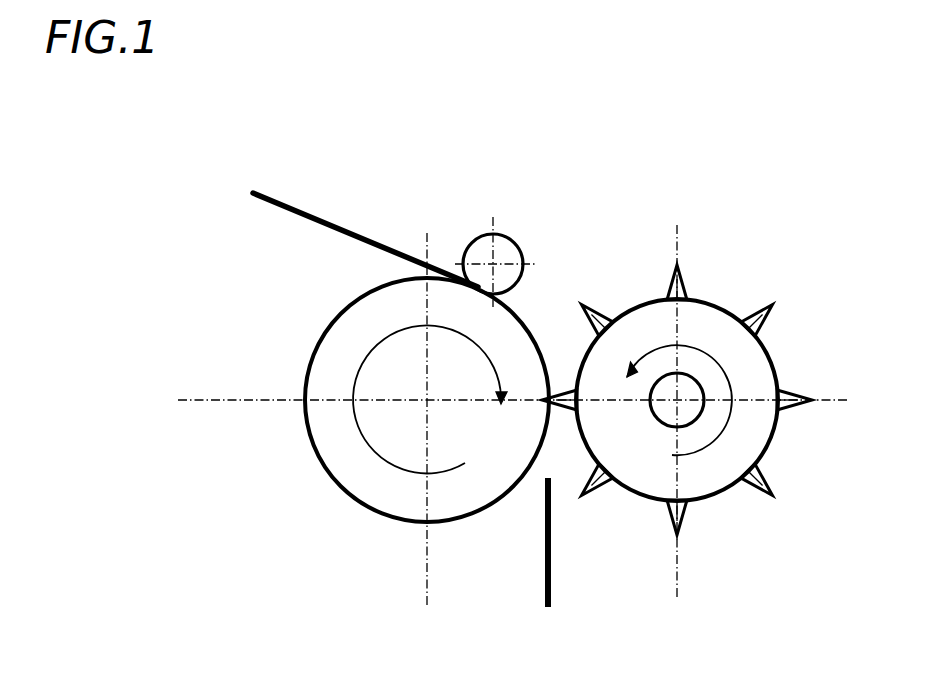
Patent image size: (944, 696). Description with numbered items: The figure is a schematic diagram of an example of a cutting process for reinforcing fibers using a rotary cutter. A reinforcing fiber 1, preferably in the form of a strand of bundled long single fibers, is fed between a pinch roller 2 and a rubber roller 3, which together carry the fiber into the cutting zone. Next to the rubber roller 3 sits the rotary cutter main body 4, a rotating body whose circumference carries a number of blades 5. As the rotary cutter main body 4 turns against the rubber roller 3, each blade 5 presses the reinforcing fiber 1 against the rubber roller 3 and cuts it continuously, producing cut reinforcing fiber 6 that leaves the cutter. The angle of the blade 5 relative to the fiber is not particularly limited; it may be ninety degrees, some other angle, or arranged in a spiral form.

The reinforcing fiber 1 is at (312, 200).
The pinch roller 2 is at (506, 236).
The rubber roller 3 is at (355, 475).
The rotary cutter main body 4 is at (714, 320).
The blade 5 is at (762, 497).
The cut reinforcing fiber 6 is at (558, 568).